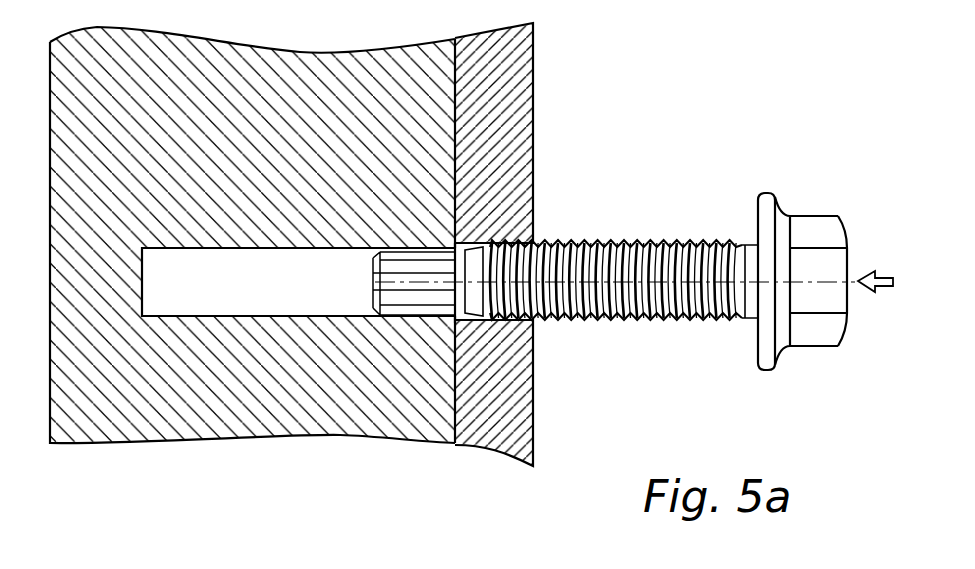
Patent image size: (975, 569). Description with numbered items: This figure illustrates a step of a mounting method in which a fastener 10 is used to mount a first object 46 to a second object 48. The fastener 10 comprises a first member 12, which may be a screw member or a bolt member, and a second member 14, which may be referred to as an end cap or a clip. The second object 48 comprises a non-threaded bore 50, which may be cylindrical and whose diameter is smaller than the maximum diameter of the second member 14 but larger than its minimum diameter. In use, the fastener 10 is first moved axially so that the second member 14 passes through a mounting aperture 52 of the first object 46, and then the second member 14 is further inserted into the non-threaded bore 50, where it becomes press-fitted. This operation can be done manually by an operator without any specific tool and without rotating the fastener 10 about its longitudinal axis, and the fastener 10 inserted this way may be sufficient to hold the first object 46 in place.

The fastener 10 is at (647, 196).
The first member 12 is at (633, 245).
The second member 14 is at (425, 300).
The first object 46 is at (535, 397).
The second object 48 is at (455, 436).
The non-threaded bore 50 is at (292, 297).
The mounting aperture 52 is at (530, 240).